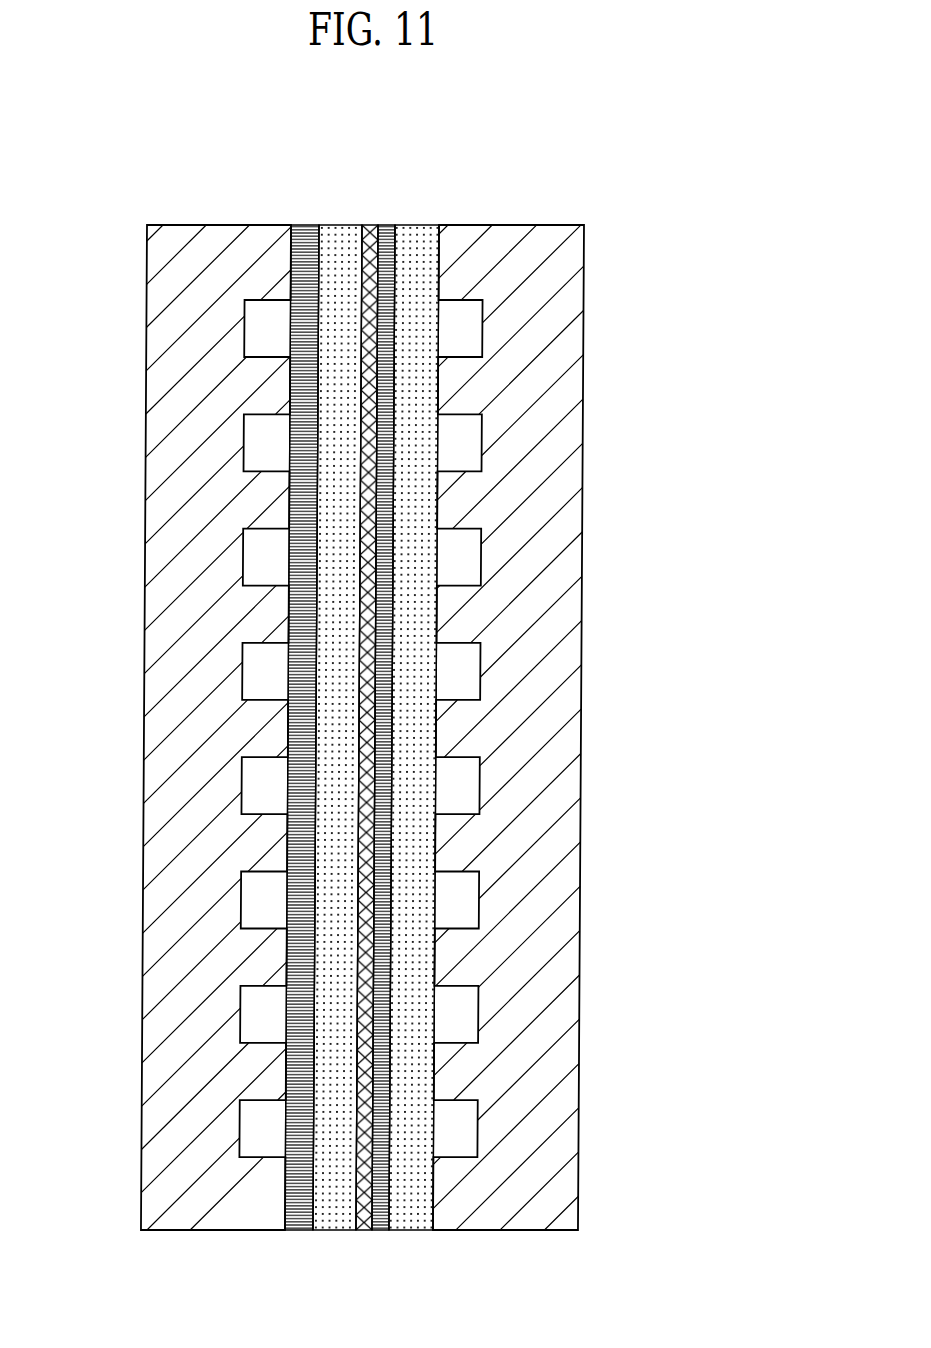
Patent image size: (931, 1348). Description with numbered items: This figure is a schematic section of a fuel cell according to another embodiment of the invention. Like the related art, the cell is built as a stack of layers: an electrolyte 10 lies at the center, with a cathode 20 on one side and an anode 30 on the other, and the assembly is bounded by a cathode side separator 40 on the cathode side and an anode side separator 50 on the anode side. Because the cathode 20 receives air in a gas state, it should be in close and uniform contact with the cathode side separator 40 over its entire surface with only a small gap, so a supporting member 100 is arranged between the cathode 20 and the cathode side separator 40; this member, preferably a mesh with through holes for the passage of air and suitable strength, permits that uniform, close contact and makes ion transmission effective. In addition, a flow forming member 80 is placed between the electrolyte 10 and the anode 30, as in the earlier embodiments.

The electrolyte 10 is at (365, 1229).
The cathode 20 is at (331, 1229).
The anode 30 is at (416, 1212).
The cathode side separator 40 is at (147, 938).
The anode side separator 50 is at (560, 903).
The flow forming member 80 is at (387, 1229).
The supporting member 100 is at (290, 1231).